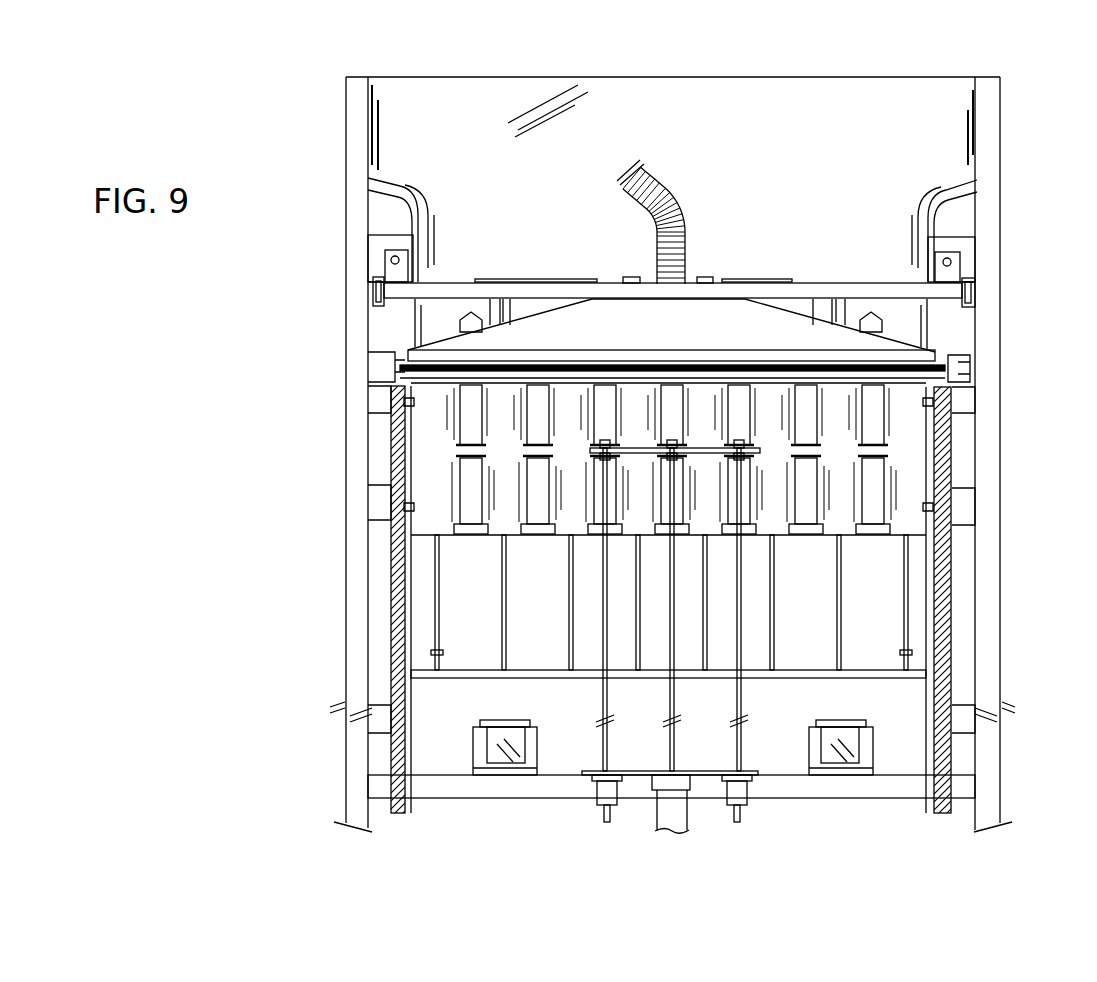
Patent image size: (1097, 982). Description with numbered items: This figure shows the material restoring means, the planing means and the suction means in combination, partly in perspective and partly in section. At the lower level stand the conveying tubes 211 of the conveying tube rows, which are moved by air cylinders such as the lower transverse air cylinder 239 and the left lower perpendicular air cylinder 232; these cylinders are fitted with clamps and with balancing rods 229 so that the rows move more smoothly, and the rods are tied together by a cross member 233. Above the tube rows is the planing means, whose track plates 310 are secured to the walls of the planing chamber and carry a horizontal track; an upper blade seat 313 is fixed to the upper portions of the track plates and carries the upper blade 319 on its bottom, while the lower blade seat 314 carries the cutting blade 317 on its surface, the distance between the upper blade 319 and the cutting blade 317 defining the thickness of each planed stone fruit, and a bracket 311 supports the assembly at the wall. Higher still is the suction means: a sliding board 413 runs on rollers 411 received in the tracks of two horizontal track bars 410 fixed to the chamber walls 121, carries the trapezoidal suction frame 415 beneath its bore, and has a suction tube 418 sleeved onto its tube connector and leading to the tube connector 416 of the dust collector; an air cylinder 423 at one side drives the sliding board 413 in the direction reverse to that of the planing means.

The housing 121 is at (940, 143).
The conveying tube 211 is at (543, 458).
The balancing rod 229 is at (602, 742).
The left lower perpendicular air cylinder 232 is at (677, 820).
The cross bar 233 is at (605, 437).
The lower transverse air cylinder 239 is at (500, 737).
The track plate 310 is at (373, 358).
The support bracket 311 is at (390, 372).
The upper blade seat 313 is at (405, 360).
The lower blade seat 314 is at (620, 377).
The cutting blade 317 is at (445, 372).
The upper blade 319 is at (588, 368).
The horizontal track bar 410 is at (375, 300).
The roller 411 is at (378, 278).
The sliding board 413 is at (452, 290).
The trapezoidal suction frame 415 is at (773, 328).
The tube connector 416 is at (628, 280).
The suction tube 418 is at (648, 187).
The air cylinder 423 is at (390, 242).